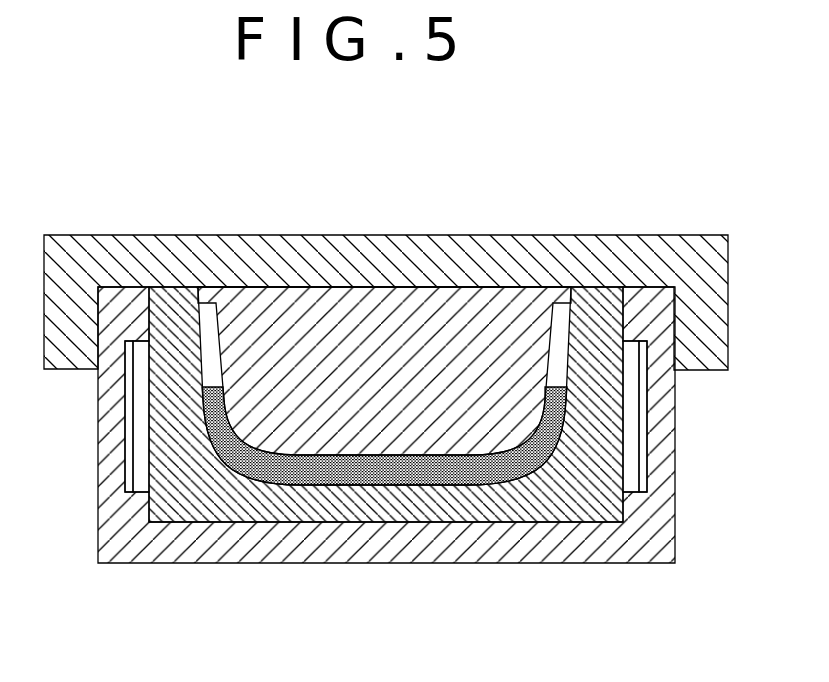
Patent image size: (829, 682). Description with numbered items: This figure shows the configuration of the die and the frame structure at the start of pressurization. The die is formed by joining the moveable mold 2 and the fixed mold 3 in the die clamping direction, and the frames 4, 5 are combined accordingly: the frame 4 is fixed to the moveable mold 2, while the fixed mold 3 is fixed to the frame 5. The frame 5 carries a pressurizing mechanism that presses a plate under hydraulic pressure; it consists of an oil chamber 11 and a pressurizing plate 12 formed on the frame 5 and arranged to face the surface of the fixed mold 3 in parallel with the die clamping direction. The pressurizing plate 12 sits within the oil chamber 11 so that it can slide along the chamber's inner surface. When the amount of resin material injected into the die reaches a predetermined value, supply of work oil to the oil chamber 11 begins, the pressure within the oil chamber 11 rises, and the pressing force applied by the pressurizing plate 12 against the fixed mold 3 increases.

The moveable mold 2 is at (353, 343).
The fixed mold 3 is at (603, 510).
The frame 4 is at (135, 250).
The frame 5 is at (283, 548).
The oil chamber 11 is at (129, 410).
The pressurizing plate 12 is at (142, 468).